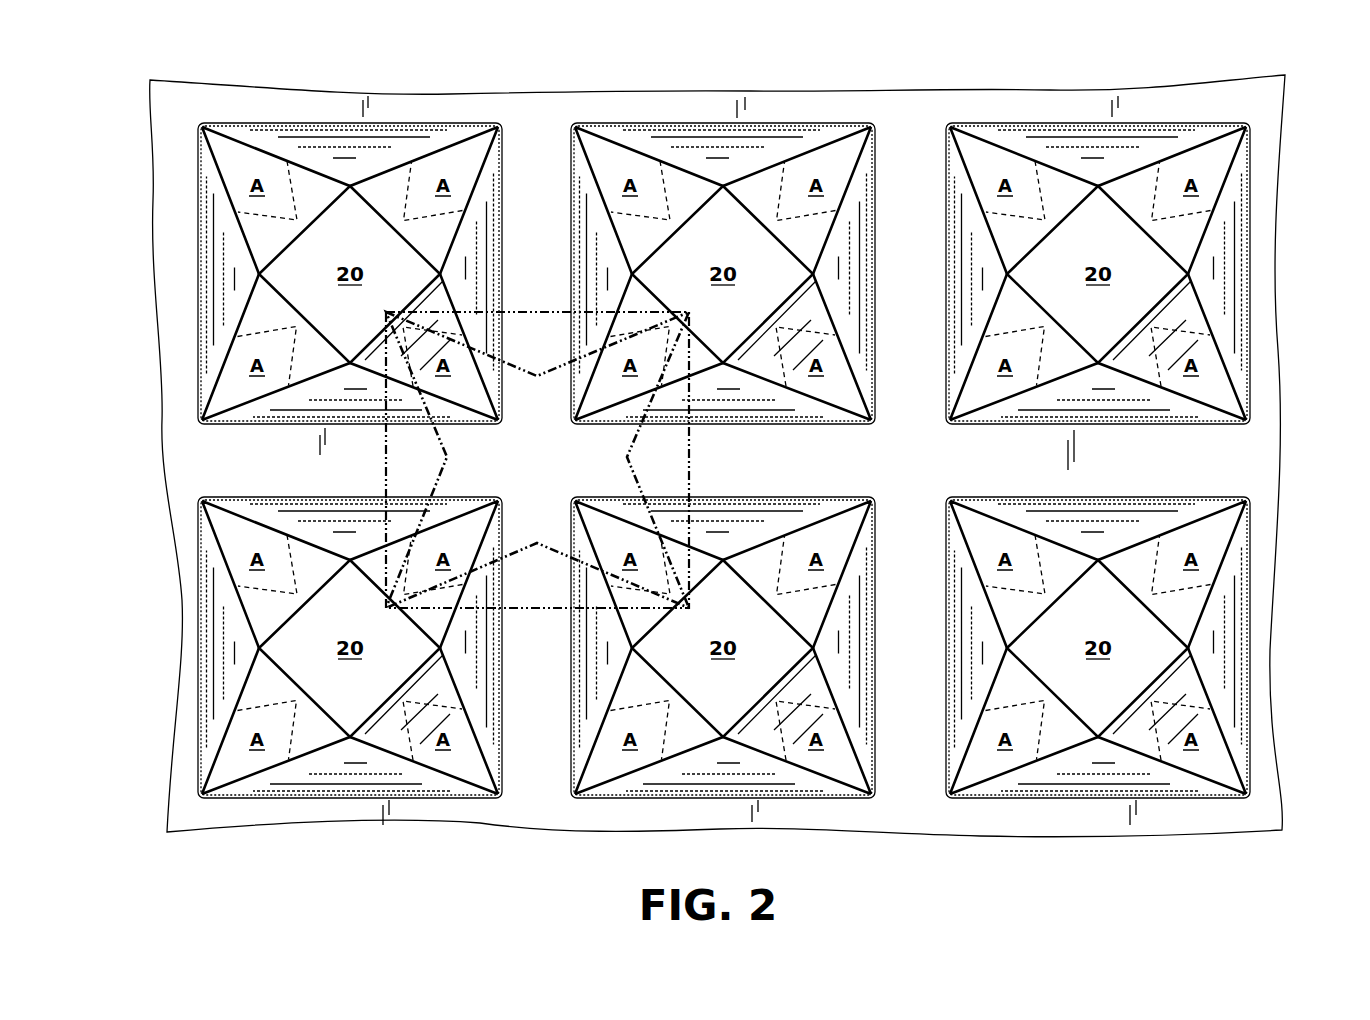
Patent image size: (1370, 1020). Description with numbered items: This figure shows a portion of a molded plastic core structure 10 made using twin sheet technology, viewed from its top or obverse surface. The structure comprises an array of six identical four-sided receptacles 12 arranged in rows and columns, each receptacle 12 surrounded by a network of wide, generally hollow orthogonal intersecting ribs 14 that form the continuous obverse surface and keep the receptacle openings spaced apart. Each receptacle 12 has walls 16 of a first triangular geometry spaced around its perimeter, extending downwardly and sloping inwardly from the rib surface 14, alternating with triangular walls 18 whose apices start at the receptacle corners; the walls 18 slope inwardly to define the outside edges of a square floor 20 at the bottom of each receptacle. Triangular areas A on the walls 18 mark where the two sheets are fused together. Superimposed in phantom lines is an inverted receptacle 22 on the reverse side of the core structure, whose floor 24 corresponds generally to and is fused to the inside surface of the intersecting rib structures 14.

The molded plastic core structure 10 is at (860, 92).
The receptacle 12 is at (456, 122).
The orthogonal intersecting ribs 14 is at (1235, 464).
The walls of first triangular geometry 16 is at (345, 150).
The polygonal walls 18 is at (230, 168).
The square floor 20 is at (723, 461).
The inverted receptacle 22 is at (692, 433).
The floor of inverted receptacle 24 is at (524, 470).